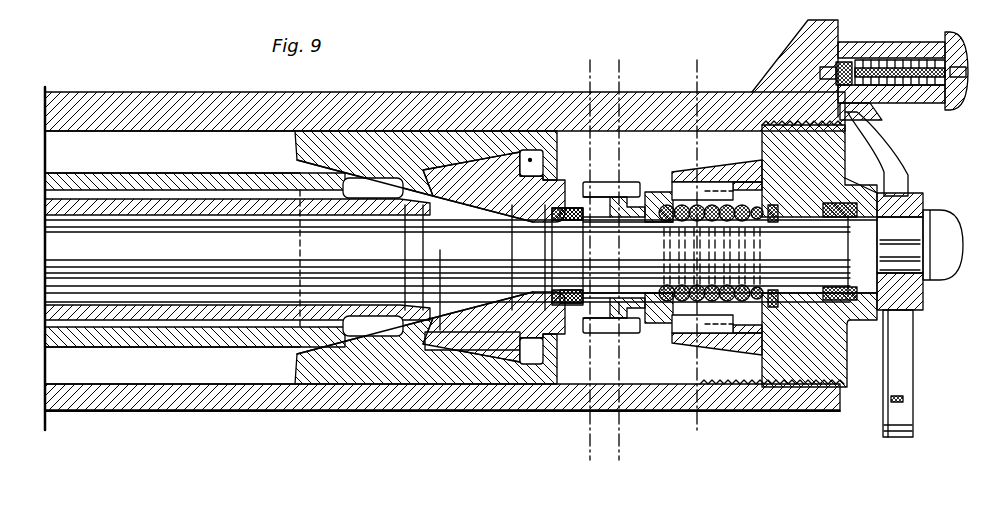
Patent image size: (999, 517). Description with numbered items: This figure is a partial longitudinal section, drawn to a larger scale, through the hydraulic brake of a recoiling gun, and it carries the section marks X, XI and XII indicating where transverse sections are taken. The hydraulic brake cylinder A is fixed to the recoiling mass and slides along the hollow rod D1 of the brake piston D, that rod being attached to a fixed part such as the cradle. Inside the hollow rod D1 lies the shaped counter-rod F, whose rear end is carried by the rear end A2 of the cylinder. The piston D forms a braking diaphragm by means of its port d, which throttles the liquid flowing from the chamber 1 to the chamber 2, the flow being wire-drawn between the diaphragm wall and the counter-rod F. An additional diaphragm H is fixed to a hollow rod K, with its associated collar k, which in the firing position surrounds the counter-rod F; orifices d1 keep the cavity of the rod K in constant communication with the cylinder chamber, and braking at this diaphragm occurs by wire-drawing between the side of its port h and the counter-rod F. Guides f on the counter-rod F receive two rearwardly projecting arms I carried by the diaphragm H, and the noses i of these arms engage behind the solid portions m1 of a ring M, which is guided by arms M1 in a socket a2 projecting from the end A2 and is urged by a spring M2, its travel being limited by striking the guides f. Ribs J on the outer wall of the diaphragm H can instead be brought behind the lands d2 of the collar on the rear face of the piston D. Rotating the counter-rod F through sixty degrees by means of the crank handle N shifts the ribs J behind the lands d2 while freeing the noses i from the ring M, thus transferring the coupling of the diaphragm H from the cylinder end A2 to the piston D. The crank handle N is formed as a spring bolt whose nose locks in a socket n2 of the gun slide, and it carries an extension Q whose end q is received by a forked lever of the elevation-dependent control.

The hydraulic brake cylinder A is at (86, 115).
The rear end of the cylinder A2 is at (830, 353).
The brake piston D is at (345, 143).
The hollow rod D1 is at (123, 183).
The hollow rod K is at (170, 205).
The collar k is at (213, 218).
The chamber 1 is at (256, 148).
The chamber 2 is at (650, 130).
The port d is at (412, 190).
The orifices d1 is at (430, 200).
The lands d2 is at (528, 218).
The additional diaphragm H is at (455, 190).
The ribs J is at (510, 183).
The port h is at (535, 220).
The counter-rod F is at (152, 270).
The guides f is at (570, 205).
The arms I is at (590, 192).
The noses i is at (640, 190).
The solid portions m1 is at (612, 200).
The ring M is at (652, 205).
The arms M1 is at (700, 195).
The spring M2 is at (768, 208).
The socket a2 is at (730, 178).
The crank handle N is at (905, 183).
The socket n2 is at (820, 72).
The extension of the crank Q is at (903, 372).
The end of the extension q is at (911, 426).
The section line X is at (705, 245).
The section line XI is at (601, 260).
The section line XII is at (631, 260).